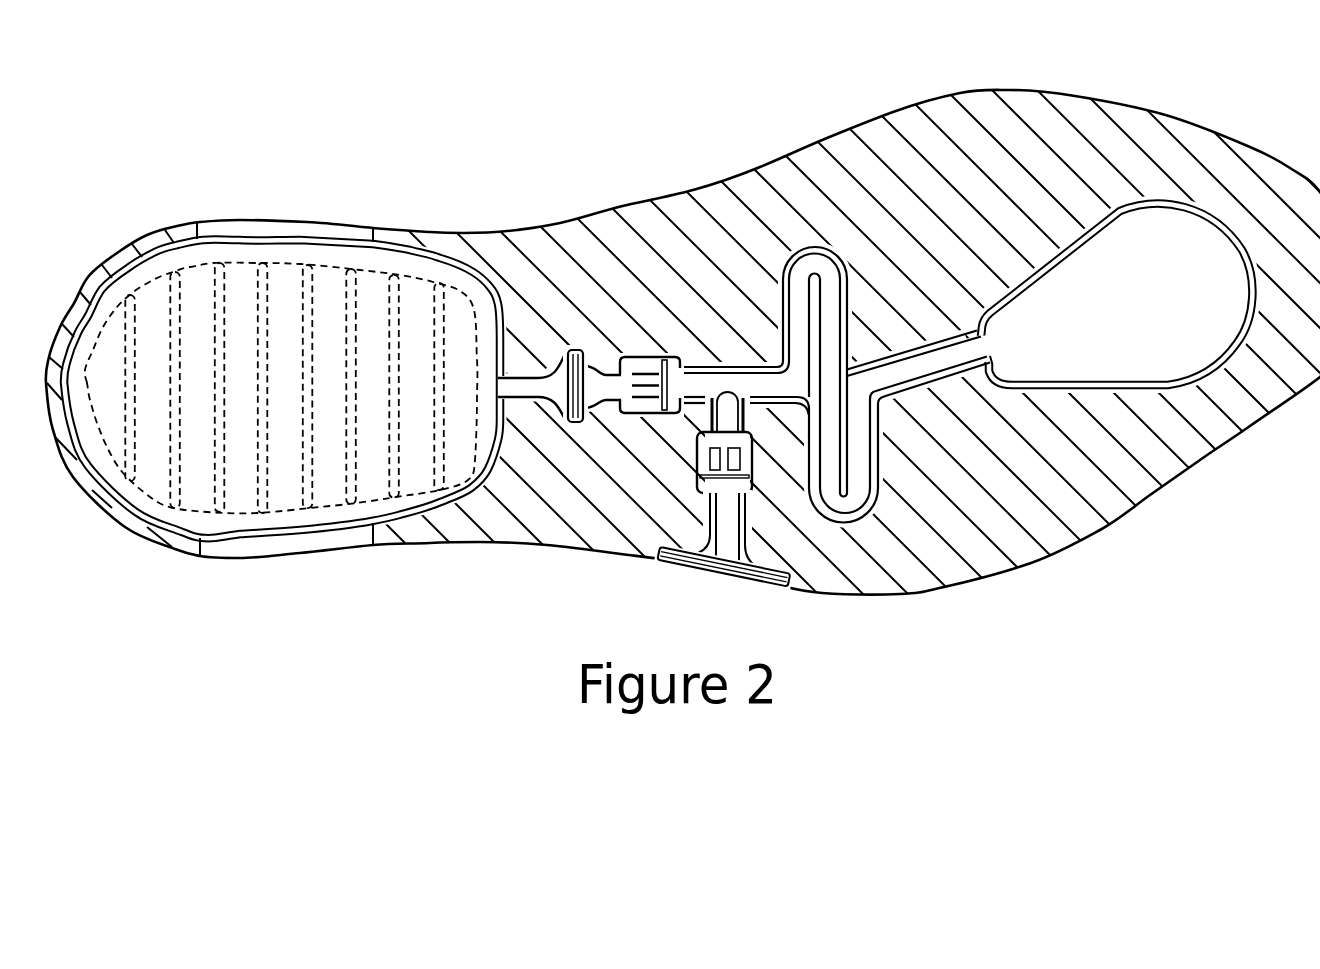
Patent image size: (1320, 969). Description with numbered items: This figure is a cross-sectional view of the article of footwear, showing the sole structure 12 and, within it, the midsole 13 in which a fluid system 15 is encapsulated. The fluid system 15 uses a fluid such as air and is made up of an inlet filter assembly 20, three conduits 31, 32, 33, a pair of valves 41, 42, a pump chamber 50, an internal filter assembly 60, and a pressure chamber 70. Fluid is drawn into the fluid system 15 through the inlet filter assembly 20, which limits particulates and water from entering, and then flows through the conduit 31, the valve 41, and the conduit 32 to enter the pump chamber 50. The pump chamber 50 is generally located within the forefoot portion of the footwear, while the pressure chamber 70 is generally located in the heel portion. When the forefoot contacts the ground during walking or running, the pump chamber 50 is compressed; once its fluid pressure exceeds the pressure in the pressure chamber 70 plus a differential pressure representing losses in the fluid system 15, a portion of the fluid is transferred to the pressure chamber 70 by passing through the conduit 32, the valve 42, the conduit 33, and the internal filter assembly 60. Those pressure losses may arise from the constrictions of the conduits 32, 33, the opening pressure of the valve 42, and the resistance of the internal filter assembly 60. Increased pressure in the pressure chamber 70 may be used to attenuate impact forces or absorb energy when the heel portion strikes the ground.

The sole structure 12 is at (736, 170).
The midsole 13 is at (906, 122).
The fluid system 15 is at (869, 528).
The inlet filter assembly 20 is at (722, 580).
The conduit 31 is at (731, 508).
The conduit 32 is at (868, 456).
The conduit 33 is at (608, 372).
The valve 41 is at (703, 462).
The valve 42 is at (645, 377).
The pump chamber 50 is at (1163, 322).
The internal filter assembly 60 is at (572, 424).
The pressure chamber 70 is at (277, 249).